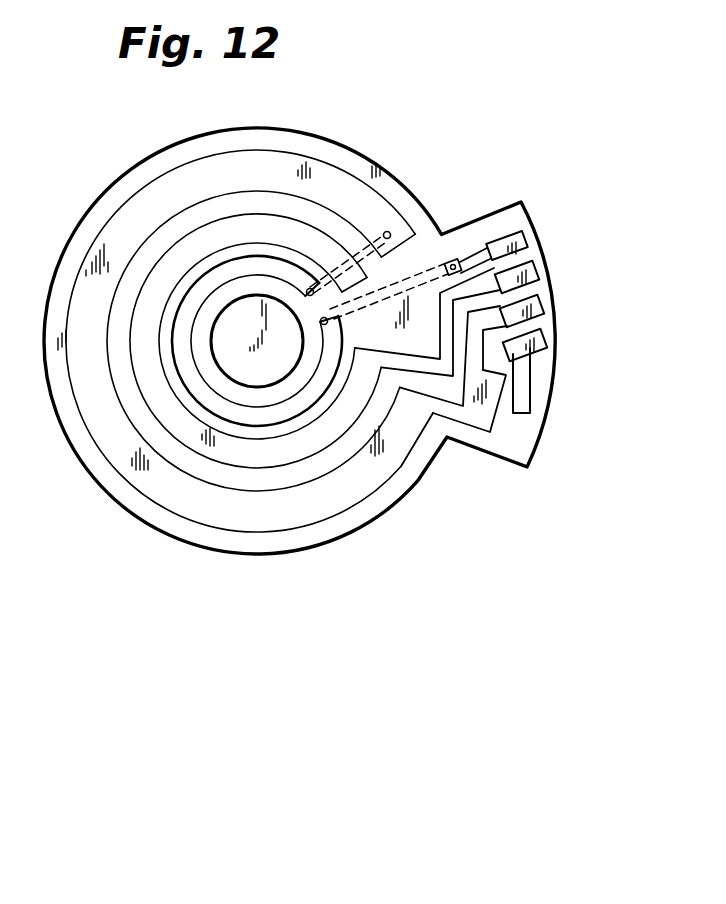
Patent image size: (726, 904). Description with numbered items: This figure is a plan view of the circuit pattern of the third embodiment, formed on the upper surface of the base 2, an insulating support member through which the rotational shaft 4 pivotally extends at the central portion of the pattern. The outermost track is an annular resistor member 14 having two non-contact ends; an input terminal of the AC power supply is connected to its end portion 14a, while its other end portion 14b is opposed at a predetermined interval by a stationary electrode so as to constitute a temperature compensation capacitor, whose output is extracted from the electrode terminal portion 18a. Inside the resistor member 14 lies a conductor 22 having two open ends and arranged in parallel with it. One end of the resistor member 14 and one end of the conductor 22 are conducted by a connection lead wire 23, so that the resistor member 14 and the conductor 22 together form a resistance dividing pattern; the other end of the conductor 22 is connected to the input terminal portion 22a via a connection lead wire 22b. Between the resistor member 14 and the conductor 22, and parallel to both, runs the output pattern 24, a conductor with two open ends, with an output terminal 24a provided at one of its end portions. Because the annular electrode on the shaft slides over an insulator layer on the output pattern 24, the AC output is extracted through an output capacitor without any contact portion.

The base 2 is at (121, 172).
The rotational shaft 4 is at (212, 352).
The resistor member 14 is at (237, 515).
The end portion of the resistor member 14a is at (551, 313).
The end portion of the resistor member 14b is at (473, 413).
The electrode terminal portion 18a is at (552, 348).
The conductor 22 is at (207, 397).
The input terminal portion 22a is at (538, 240).
The connection lead wire 22b is at (420, 272).
The connection lead wire 23 is at (352, 248).
The output pattern 24 is at (313, 440).
The output terminal 24a is at (548, 280).